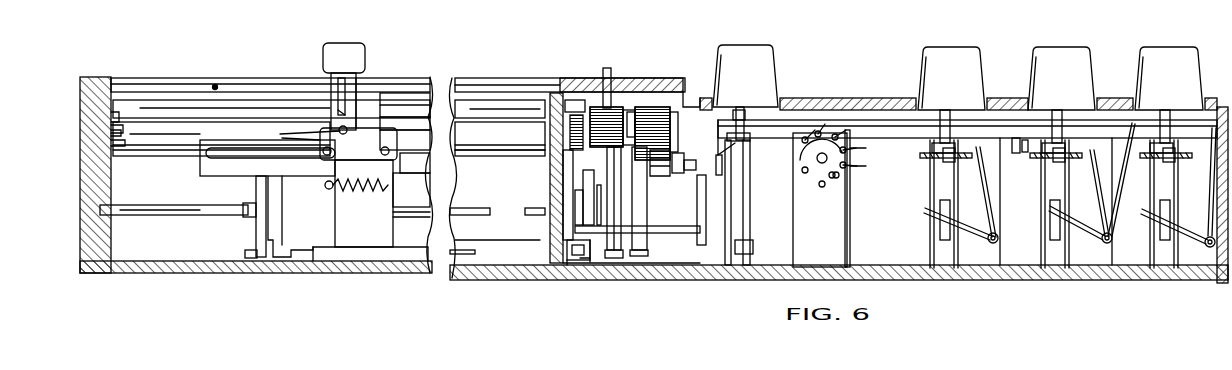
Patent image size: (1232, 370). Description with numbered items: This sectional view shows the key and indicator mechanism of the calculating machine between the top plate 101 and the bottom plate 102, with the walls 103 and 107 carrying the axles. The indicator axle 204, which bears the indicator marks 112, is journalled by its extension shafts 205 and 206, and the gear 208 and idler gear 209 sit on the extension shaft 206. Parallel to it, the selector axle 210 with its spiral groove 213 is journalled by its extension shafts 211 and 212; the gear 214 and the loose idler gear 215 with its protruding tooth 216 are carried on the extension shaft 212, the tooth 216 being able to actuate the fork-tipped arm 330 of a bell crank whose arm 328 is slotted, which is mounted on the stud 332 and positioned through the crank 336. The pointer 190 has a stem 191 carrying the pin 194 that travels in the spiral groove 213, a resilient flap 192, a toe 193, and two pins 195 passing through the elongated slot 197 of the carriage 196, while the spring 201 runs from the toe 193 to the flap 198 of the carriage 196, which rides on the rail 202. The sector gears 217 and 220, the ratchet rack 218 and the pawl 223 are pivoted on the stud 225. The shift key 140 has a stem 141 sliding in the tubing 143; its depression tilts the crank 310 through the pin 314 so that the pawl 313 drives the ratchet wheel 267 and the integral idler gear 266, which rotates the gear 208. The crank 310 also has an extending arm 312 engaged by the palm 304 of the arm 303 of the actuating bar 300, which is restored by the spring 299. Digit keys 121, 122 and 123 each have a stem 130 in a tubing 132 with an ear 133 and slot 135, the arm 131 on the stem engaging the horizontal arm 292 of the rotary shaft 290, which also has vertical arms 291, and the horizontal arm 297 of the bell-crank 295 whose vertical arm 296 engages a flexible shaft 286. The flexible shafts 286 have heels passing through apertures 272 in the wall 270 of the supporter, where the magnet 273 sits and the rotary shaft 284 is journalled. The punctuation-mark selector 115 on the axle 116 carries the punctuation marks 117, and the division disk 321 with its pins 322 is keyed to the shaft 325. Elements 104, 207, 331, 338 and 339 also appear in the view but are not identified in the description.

The top plate 101 is at (845, 92).
The bottom plate 102 is at (156, 266).
The wall 103 is at (100, 237).
The right side wall 104 is at (1218, 262).
The wall 107 is at (536, 270).
The indicator marks 112 is at (521, 108).
The punctuation-mark selector 115 is at (606, 66).
The punctuation-mark axle 116 is at (147, 88).
The punctuation marks 117 is at (215, 84).
The digit key 121 is at (943, 68).
The digit key 122 is at (1058, 66).
The digit key 123 is at (1165, 66).
The stem 130 is at (1060, 108).
The arm 131 is at (1052, 185).
The tubing 132 is at (1047, 178).
The ear 133 is at (1042, 160).
The slot 135 is at (1050, 232).
The shift key 140 is at (739, 60).
The stem 141 is at (739, 109).
The tubing 143 is at (738, 249).
The pointer 190 is at (347, 56).
The stem 191 is at (356, 85).
The resilient flap 192 is at (342, 104).
The toe 193 is at (328, 186).
The pin 194 is at (291, 130).
The pins 195 is at (381, 151).
The carriage 196 is at (320, 246).
The elongated slot 197 is at (274, 154).
The flap 198 is at (393, 190).
The spring 201 is at (379, 189).
The rail 202 is at (456, 262).
The indicator axle 204 is at (500, 112).
The extension shaft 205 is at (110, 117).
The extension shaft 206 is at (555, 108).
The pinion 207 is at (576, 112).
The gear 208 is at (651, 106).
The idler gear 209 is at (612, 100).
The selector axle 210 is at (480, 151).
The extension shaft 211 is at (113, 146).
The extension shaft 212 is at (500, 135).
The spiral groove 213 is at (409, 133).
The gear 214 is at (592, 105).
The idler gear 215 is at (563, 156).
The protruding tooth 216 is at (563, 166).
The sector gear 217 is at (610, 262).
The ratchet rack 218 is at (627, 205).
The sector gear 220 is at (641, 258).
The pawl 223 is at (631, 110).
The stud 225 is at (637, 241).
The idler gear 266 is at (651, 186).
The ratchet wheel 267 is at (674, 110).
The wall 270 is at (832, 233).
The apertures 272 is at (840, 178).
The magnet 273 is at (824, 187).
The rotary shaft 284 is at (816, 158).
The flexible shafts 286 is at (867, 166).
The rotary shafts 290 is at (1105, 243).
The vertical arms 291 is at (1210, 205).
The horizontal arms 292 is at (1185, 200).
The bell-cranks 295 is at (999, 240).
The vertical arm 296 is at (981, 196).
The horizontal arm 297 is at (928, 209).
The spring 299 is at (1114, 232).
The actuating bar 300 is at (887, 128).
The arm 303 is at (732, 146).
The palm 304 is at (745, 150).
The crank 310 is at (702, 206).
The extending arm 312 is at (719, 160).
The pawl 313 is at (679, 158).
The pin 314 is at (689, 170).
The division disk 321 is at (256, 228).
The pins 322 is at (245, 254).
The shaft 325 is at (190, 208).
The arm 328 is at (582, 270).
The fork-tipped arm 330 is at (583, 207).
The bar 331 is at (575, 194).
The stud 332 is at (592, 266).
The crank 336 is at (567, 252).
The pin 338 is at (583, 214).
The bracket 339 is at (566, 266).